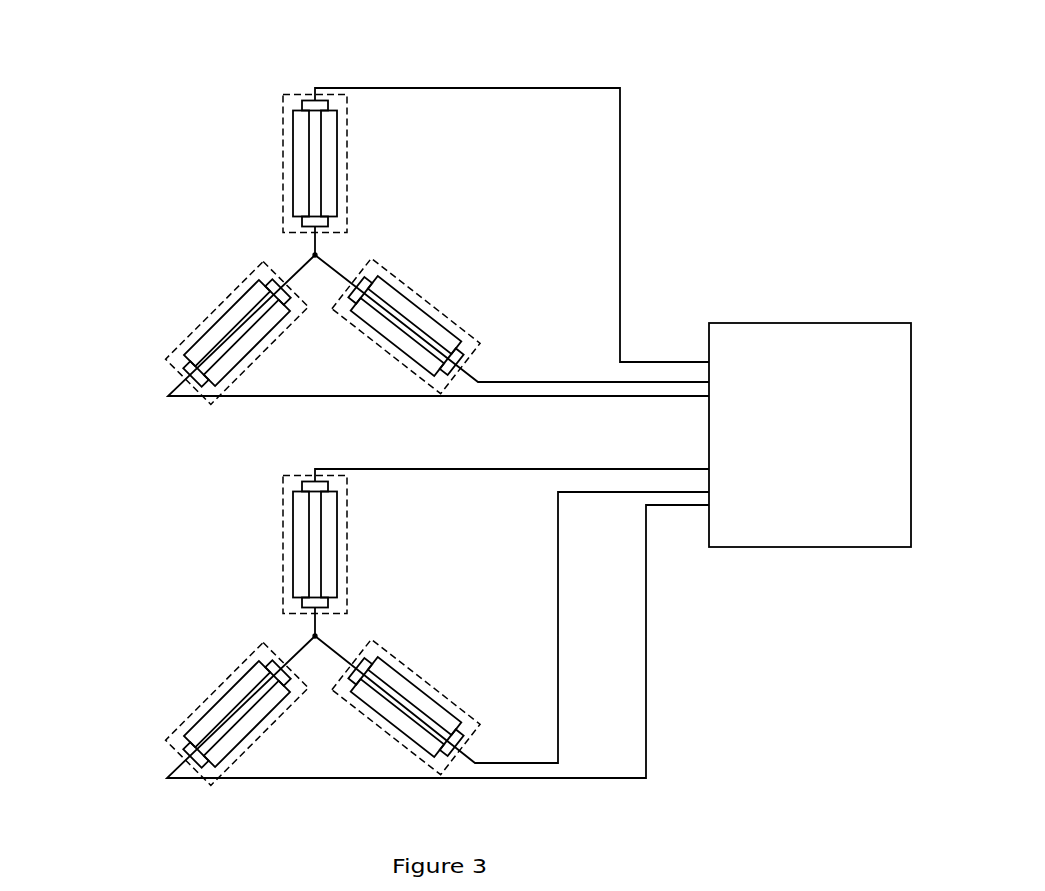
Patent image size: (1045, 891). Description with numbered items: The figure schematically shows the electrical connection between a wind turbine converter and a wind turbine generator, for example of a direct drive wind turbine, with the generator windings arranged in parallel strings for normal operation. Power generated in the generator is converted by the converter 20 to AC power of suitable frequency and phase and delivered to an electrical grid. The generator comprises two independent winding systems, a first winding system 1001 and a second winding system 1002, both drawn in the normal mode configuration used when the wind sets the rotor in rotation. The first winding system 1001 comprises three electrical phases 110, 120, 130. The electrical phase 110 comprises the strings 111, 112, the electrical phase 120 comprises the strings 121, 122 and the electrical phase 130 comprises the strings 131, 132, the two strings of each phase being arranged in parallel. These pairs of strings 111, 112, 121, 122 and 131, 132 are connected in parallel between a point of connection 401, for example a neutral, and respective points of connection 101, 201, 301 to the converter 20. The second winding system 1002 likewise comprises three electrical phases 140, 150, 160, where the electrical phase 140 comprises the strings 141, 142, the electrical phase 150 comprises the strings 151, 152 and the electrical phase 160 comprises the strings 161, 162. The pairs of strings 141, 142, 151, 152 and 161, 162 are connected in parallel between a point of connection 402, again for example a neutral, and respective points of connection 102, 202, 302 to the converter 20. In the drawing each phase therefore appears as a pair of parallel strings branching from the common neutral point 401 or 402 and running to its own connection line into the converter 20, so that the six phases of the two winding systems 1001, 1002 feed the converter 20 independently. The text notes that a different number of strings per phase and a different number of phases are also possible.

The converter 20 is at (867, 322).
The first winding system 1001 is at (175, 213).
The second winding system 1002 is at (176, 600).
The point of connection 101 is at (497, 92).
The point of connection 102 is at (493, 472).
The point of connection 201 is at (548, 395).
The point of connection 202 is at (567, 778).
The point of connection 301 is at (518, 382).
The point of connection 302 is at (515, 763).
The point of connection 401 is at (316, 255).
The point of connection 402 is at (316, 636).
The electrical phase 110 is at (301, 145).
The string 111 is at (303, 148).
The string 112 is at (332, 148).
The electrical phase 120 is at (207, 324).
The string 121 is at (250, 298).
The string 122 is at (272, 322).
The electrical phase 130 is at (424, 315).
The string 131 is at (378, 318).
The string 132 is at (387, 295).
The electrical phase 140 is at (297, 529).
The string 141 is at (303, 529).
The string 142 is at (332, 529).
The electrical phase 150 is at (204, 705).
The string 151 is at (250, 680).
The string 152 is at (270, 703).
The electrical phase 160 is at (420, 698).
The string 161 is at (377, 700).
The string 162 is at (387, 680).